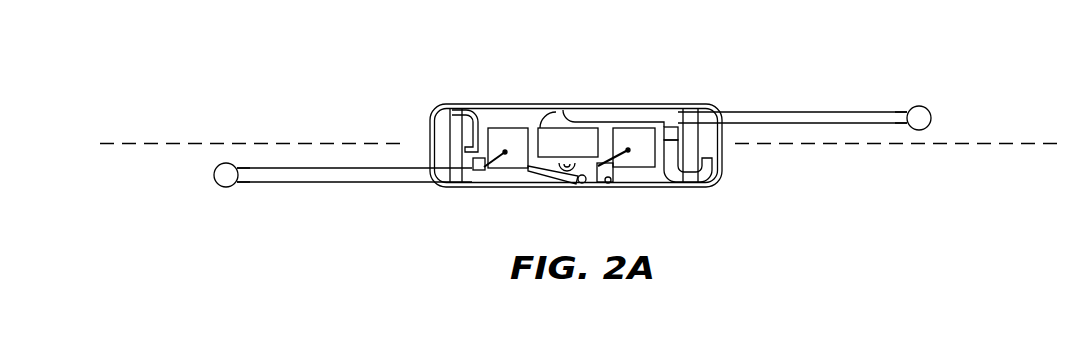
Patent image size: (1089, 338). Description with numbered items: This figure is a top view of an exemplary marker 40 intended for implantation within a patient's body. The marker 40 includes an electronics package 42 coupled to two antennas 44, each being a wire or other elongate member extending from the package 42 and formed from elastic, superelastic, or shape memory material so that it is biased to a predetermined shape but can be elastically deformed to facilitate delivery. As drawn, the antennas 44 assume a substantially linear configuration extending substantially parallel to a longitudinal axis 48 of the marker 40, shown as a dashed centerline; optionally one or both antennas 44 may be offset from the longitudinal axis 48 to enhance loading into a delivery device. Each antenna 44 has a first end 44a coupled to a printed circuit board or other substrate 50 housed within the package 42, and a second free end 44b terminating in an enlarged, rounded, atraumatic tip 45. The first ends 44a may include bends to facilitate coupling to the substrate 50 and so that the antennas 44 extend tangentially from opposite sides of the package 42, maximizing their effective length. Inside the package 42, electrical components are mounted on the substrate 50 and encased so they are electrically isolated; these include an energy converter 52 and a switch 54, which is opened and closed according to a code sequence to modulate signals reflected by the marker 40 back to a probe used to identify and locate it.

The marker 40 is at (672, 71).
The electronics package 42 is at (504, 101).
The antenna 44 is at (375, 185).
The first end 44a is at (466, 141).
The second free end 44b is at (247, 184).
The atraumatic tip 45 is at (223, 188).
The longitudinal axis 48 is at (158, 146).
The substrate 50 is at (518, 172).
The energy converter 52 is at (500, 172).
The switch 54 is at (557, 118).